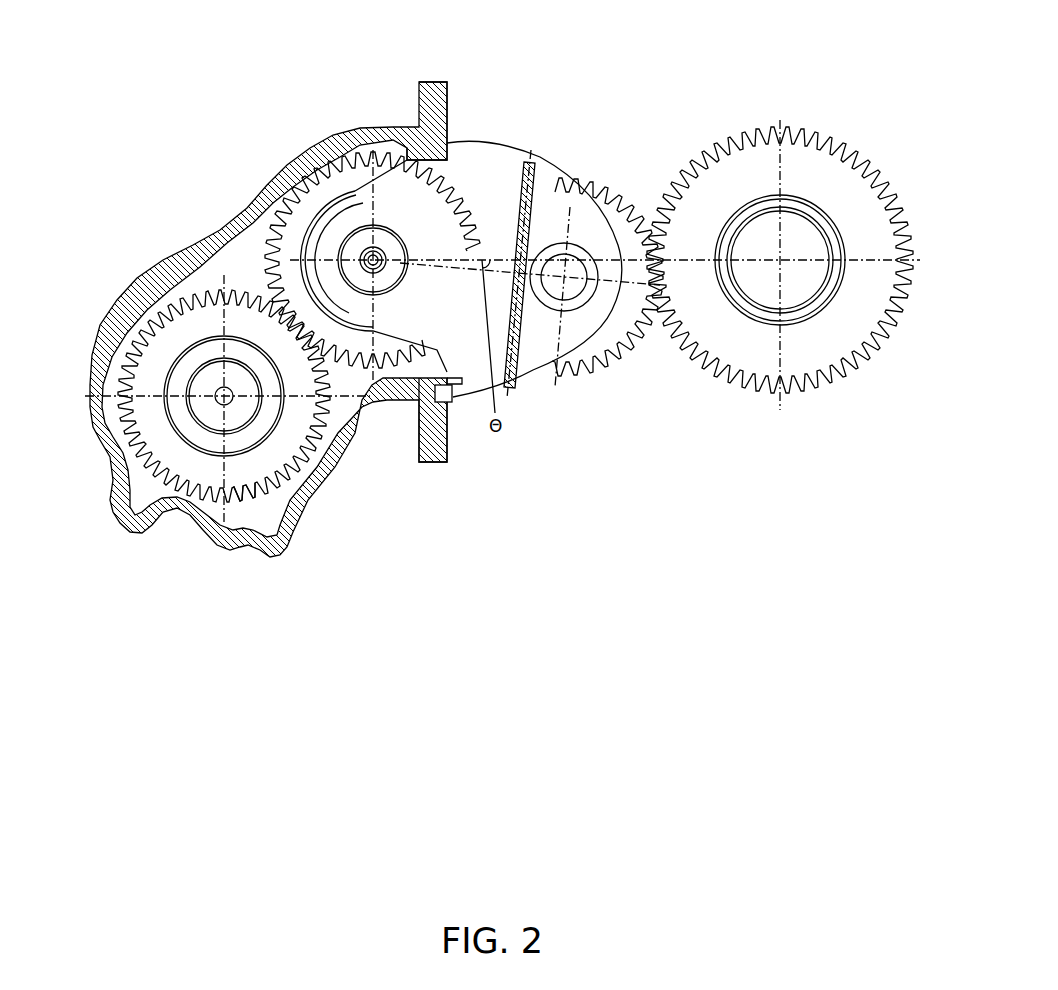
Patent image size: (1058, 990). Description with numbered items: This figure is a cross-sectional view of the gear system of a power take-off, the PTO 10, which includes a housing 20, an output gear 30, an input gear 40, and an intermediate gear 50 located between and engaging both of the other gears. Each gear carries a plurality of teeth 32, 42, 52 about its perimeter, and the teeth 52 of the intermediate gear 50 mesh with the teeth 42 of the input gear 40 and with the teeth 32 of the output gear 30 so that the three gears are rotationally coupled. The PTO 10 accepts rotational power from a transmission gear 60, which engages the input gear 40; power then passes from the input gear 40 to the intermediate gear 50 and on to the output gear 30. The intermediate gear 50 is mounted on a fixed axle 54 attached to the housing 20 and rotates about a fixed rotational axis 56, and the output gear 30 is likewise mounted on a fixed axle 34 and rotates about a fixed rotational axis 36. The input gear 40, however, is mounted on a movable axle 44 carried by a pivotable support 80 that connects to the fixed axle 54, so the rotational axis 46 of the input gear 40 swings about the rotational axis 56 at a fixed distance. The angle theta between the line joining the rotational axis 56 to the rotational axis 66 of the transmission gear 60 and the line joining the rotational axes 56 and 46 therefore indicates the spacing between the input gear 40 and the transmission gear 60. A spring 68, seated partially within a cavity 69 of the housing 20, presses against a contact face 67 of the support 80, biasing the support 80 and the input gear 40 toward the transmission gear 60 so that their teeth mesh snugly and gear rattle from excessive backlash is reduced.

The PTO 10 is at (723, 561).
The housing 20 is at (420, 83).
The output gear 30 is at (167, 483).
The teeth 32 is at (245, 497).
The fixed axle 34 is at (190, 413).
The rotational axis 36 is at (222, 396).
The input gear 40 is at (601, 360).
The teeth 42 is at (627, 343).
The movable axle 44 is at (557, 245).
The rotational axis 46 is at (565, 277).
The intermediate gear 50 is at (350, 357).
The teeth 52 is at (343, 153).
The fixed axle 54 is at (343, 250).
The rotational axis 56 is at (369, 262).
The transmission gear 60 is at (820, 135).
The rotational axis 66 is at (780, 260).
The contact face 67 is at (455, 378).
The spring 68 is at (448, 400).
The cavity 69 is at (435, 402).
The support 80 is at (468, 140).